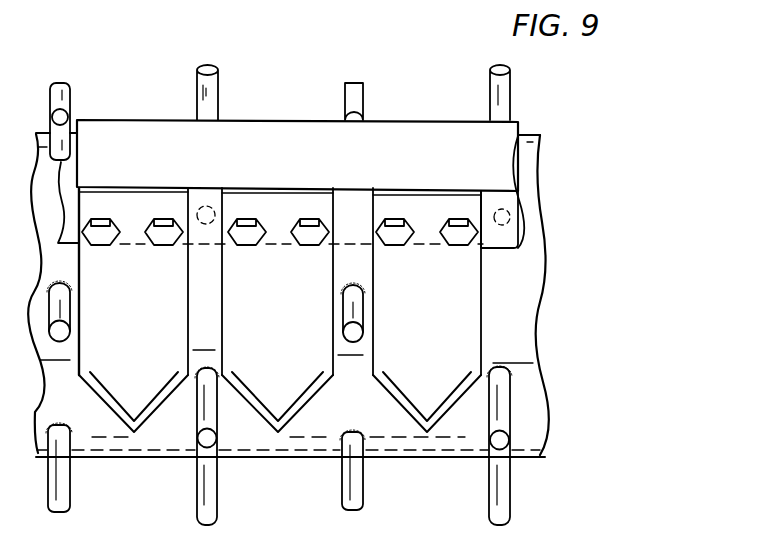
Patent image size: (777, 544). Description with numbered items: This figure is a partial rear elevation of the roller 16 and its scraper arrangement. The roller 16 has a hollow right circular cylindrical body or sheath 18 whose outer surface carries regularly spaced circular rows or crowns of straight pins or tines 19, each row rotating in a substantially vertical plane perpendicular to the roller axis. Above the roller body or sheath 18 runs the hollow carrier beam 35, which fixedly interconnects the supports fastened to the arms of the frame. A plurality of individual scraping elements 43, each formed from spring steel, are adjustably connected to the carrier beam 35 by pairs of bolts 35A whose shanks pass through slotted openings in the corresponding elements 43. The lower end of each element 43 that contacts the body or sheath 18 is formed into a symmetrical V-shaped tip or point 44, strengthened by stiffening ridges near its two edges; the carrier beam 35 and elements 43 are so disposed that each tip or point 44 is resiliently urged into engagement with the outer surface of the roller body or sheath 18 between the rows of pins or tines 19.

The roller 16 is at (102, 464).
The body or sheath 18 is at (408, 458).
The pins or tines 19 is at (363, 106).
The carrier beam 35 is at (285, 120).
The bolts 35A is at (160, 246).
The scraping elements 43 is at (80, 273).
The V-shaped tip or point 44 is at (146, 411).